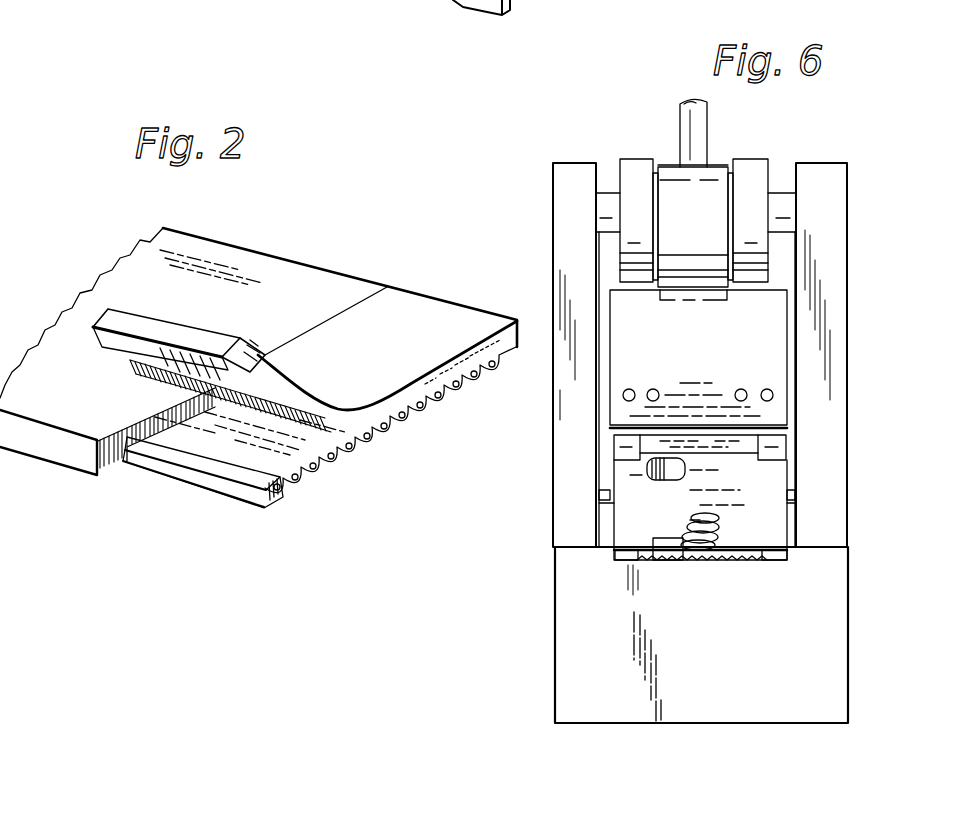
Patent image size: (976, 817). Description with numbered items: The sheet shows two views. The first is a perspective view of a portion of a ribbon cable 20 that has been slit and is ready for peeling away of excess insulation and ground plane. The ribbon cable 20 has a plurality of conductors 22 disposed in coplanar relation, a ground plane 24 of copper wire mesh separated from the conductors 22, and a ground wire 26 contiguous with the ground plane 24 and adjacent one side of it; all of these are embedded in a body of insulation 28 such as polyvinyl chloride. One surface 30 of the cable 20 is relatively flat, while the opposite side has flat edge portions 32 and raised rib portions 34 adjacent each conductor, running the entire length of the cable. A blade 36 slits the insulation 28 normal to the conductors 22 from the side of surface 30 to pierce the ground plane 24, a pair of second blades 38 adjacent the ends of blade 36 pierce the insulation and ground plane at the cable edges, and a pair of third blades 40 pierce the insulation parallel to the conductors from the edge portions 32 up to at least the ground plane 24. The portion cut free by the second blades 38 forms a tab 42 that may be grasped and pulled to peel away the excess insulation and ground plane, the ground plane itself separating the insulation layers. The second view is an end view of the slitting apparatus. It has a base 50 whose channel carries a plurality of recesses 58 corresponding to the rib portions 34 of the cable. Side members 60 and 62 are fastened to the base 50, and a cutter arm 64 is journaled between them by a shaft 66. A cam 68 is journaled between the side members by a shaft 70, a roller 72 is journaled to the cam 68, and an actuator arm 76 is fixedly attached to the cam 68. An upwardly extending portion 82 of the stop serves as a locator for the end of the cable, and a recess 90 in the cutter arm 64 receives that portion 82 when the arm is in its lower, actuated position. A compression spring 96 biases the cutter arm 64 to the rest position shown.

In FIG. 2, the ribbon cable 20 is at (326, 246).
In FIG. 2, the conductors 22 is at (356, 446).
In FIG. 2, the ground plane 24 is at (278, 390).
In FIG. 2, the ground wire 26 is at (220, 462).
In FIG. 2, the insulation 28 is at (80, 458).
In FIG. 2, the surface 30 is at (262, 225).
In FIG. 2, the flat edge portions 32 is at (213, 346).
In FIG. 2, the raised rib portions 34 is at (428, 402).
In FIG. 2, the tab 42 is at (100, 320).
In FIG. 6, the blade 36 is at (706, 455).
In FIG. 6, the second blades 38 is at (614, 448).
In FIG. 6, the third blades 40 is at (625, 556).
In FIG. 6, the base 50 is at (555, 628).
In FIG. 6, the recesses 58 is at (722, 562).
In FIG. 6, the side member 60 is at (553, 235).
In FIG. 6, the side member 62 is at (847, 262).
In FIG. 6, the cutter arm 64 is at (698, 359).
In FIG. 6, the shaft 66 is at (796, 506).
In FIG. 6, the cam 68 is at (648, 160).
In FIG. 6, the shaft 70 is at (610, 192).
In FIG. 6, the roller 72 is at (716, 170).
In FIG. 6, the actuator arm 76 is at (707, 114).
In FIG. 6, the upwardly extending portion 82 is at (661, 560).
In FIG. 6, the recess 90 is at (672, 482).
In FIG. 6, the compression spring 96 is at (722, 528).